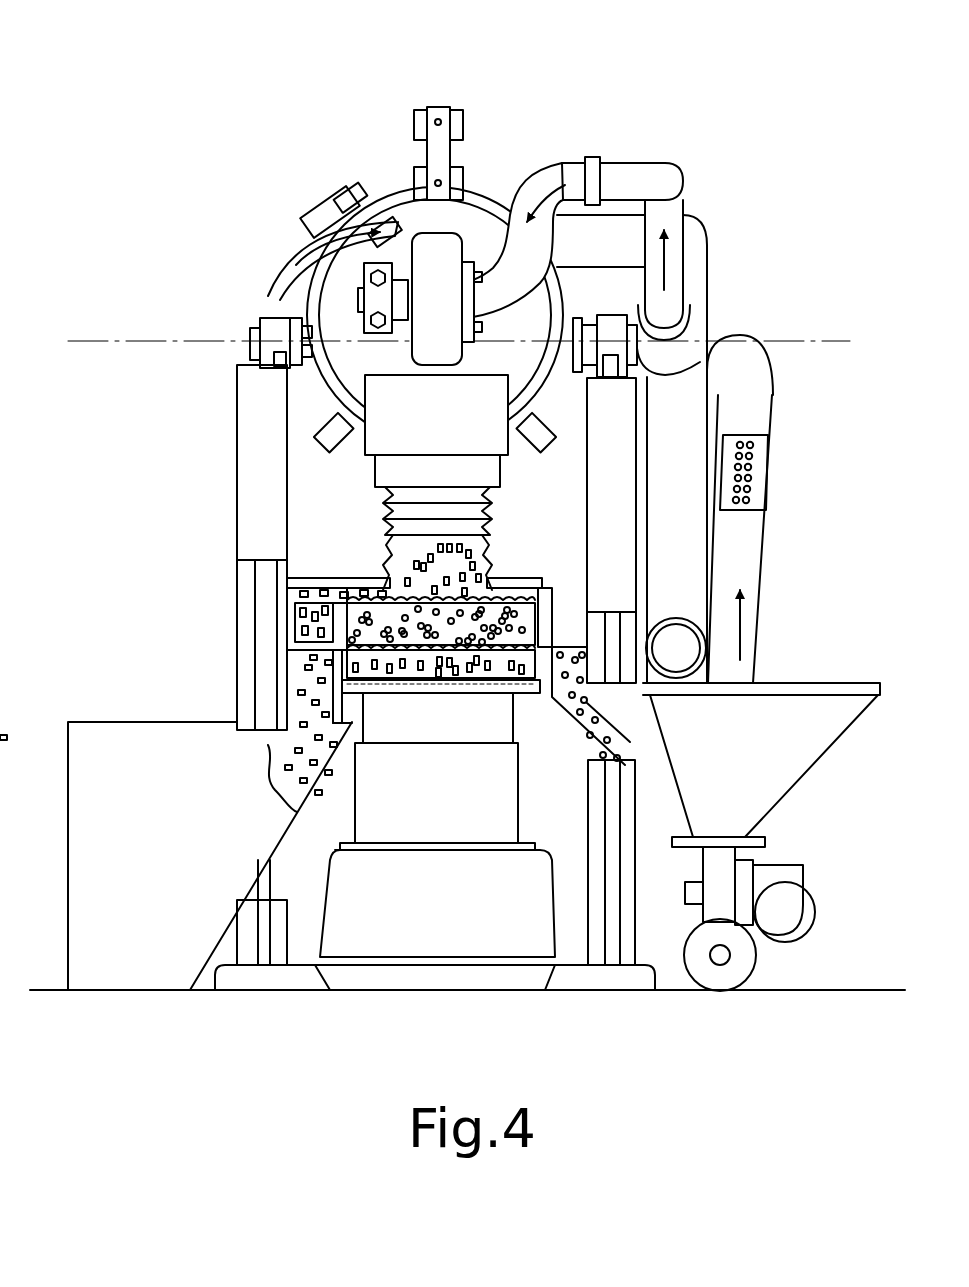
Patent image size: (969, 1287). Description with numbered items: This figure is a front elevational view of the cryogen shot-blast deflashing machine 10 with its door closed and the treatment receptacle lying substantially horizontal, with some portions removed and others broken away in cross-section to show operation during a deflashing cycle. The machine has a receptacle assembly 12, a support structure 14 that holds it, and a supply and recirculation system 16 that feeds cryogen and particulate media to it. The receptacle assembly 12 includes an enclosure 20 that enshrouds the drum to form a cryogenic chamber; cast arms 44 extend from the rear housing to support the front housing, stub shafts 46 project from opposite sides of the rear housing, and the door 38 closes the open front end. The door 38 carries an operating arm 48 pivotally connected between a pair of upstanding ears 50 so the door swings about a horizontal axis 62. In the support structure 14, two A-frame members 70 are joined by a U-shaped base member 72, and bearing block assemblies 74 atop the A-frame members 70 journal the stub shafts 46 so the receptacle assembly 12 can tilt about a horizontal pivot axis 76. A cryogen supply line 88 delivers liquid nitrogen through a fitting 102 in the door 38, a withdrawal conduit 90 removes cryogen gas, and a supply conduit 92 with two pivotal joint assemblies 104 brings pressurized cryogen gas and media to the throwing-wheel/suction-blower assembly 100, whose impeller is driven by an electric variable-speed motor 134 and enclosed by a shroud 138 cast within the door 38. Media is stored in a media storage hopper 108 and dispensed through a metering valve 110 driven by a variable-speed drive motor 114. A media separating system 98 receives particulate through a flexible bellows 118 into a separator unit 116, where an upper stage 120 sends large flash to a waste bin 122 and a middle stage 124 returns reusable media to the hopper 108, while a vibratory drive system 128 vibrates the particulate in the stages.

The deflashing machine 10 is at (183, 123).
The receptacle assembly 12 is at (322, 432).
The support structure 14 is at (272, 993).
The supply and recirculation system 16 is at (757, 655).
The enclosure 20 is at (318, 212).
The door 38 is at (350, 275).
The cast arms 44 is at (340, 447).
The stub shafts 46 is at (250, 352).
The operating arm 48 is at (427, 142).
The ears 50 is at (463, 178).
The horizontal axis 62 is at (498, 175).
The A-frame members 70 is at (237, 627).
The base member 72 is at (593, 993).
The bearing block assemblies 74 is at (265, 318).
The pivot axis 76 is at (140, 343).
The cryogen supply line 88 is at (294, 262).
The withdrawal conduit 90 is at (708, 228).
The supply conduit 92 is at (768, 430).
The media separating system 98 is at (333, 576).
The throwing-wheel/suction-blower assembly 100 is at (465, 356).
The fitting 102 is at (372, 203).
The pivotal joint assemblies 104 is at (607, 163).
The media storage hopper 108 is at (780, 808).
The metering valve 110 is at (735, 898).
The variable-speed drive motor 114 is at (808, 905).
The separator unit 116 is at (400, 963).
The bellows 118 is at (490, 510).
The upper stage 120 is at (560, 582).
The waste bin 122 is at (147, 740).
The middle stage 124 is at (500, 615).
The vibratory drive system 128 is at (458, 814).
The electric variable-speed motor 134 is at (385, 334).
The shroud 138 is at (440, 350).